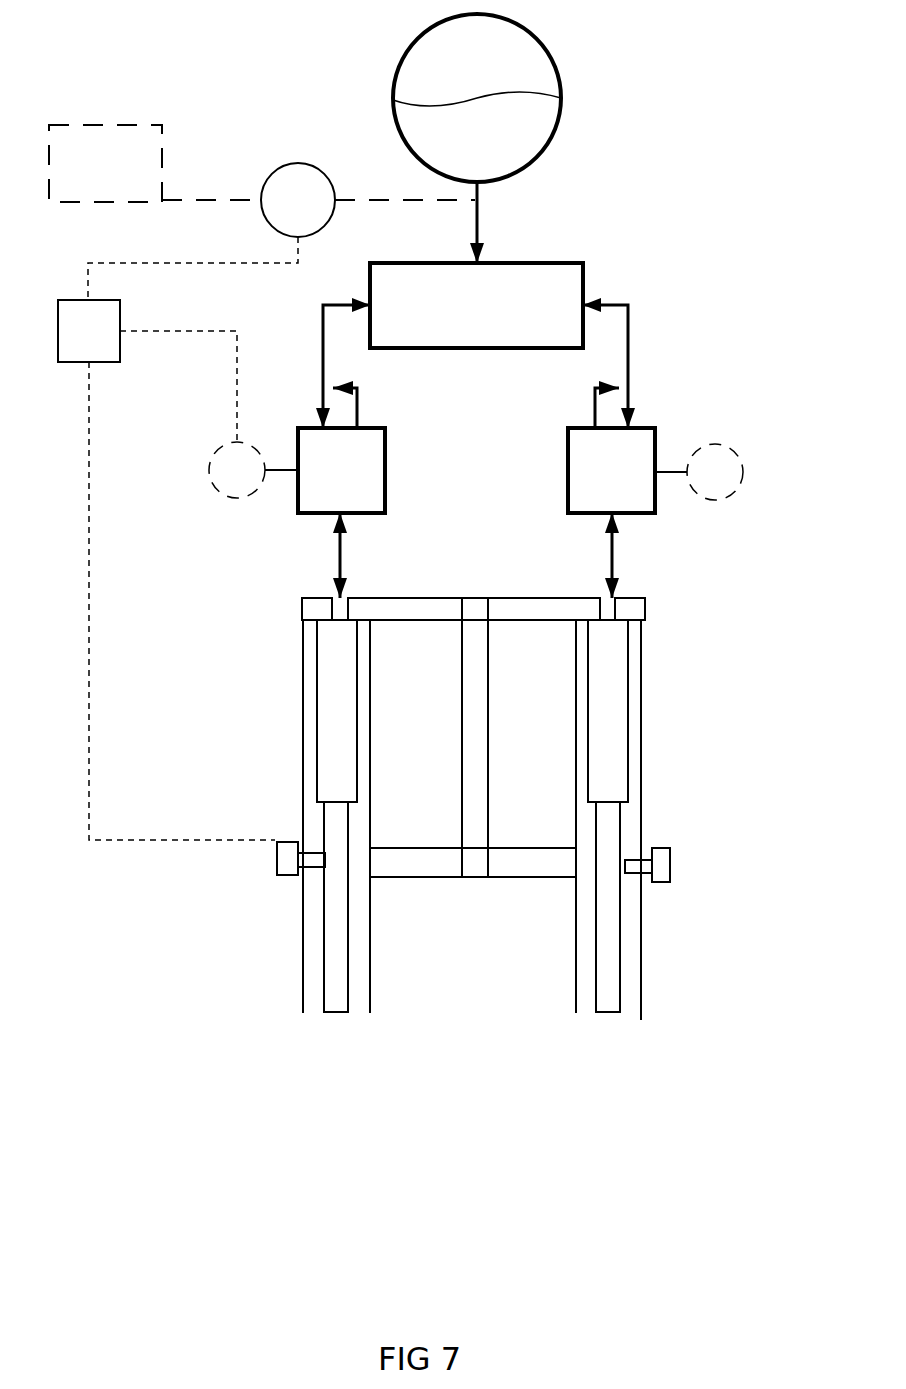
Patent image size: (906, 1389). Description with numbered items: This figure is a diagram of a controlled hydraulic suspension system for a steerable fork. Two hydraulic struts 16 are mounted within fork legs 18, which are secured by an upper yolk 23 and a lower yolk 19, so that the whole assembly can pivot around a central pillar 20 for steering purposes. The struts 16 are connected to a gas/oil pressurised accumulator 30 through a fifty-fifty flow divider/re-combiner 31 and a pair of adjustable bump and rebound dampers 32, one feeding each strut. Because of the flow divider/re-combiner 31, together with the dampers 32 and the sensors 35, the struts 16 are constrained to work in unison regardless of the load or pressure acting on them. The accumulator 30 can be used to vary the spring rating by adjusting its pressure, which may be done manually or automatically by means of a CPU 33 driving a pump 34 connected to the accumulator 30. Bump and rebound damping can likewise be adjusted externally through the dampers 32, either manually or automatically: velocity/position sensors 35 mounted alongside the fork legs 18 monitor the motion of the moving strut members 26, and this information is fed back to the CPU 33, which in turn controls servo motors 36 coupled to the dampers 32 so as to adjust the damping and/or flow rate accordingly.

The hydraulic struts 16 is at (335, 728).
The fork legs 18 is at (575, 985).
The yolk 19 is at (412, 865).
The pillar 20 is at (467, 724).
The yolk 23 is at (645, 600).
The strut moving members 26 is at (333, 982).
The gas/oil pressurised accumulator 30 is at (562, 113).
The 50:50 flow divider/re-combiner 31 is at (583, 265).
The adjustable bump and rebound dampers 32 is at (568, 453).
The CPU 33 is at (166, 570).
The pump 34 is at (262, 212).
The velocity/position sensors 35 is at (277, 868).
The servo motors 36 is at (476, 471).